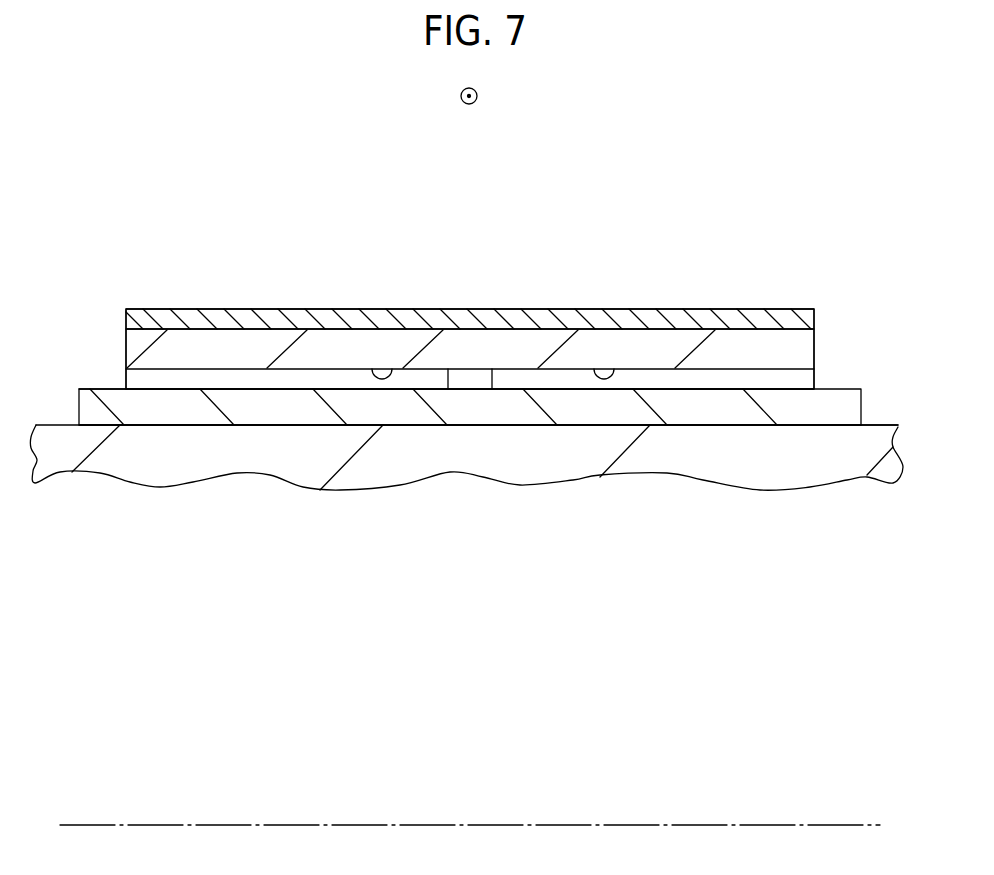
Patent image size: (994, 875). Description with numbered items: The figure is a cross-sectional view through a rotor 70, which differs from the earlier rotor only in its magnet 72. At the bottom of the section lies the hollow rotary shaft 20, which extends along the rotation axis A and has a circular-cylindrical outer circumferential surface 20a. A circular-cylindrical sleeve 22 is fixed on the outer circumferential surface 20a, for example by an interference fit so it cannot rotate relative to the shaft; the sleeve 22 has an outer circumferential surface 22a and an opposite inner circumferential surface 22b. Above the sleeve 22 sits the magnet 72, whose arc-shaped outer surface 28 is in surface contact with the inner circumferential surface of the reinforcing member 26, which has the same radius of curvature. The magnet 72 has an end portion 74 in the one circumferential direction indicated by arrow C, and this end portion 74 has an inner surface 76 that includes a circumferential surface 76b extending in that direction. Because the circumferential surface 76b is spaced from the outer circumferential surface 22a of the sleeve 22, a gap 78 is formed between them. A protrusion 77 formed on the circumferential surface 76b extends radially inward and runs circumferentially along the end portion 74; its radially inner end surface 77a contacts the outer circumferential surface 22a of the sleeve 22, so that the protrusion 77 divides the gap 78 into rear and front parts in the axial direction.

The rotor 70 is at (828, 113).
The arrow C is at (479, 102).
The magnet 72 is at (822, 346).
The outer surface 28 is at (243, 327).
The reinforcing member 26 is at (327, 318).
The end portion 74 is at (522, 363).
The inner surface 76 is at (314, 378).
The circumferential surface 76b is at (388, 369).
The protrusion 77 is at (470, 380).
The radially inner end surface 77a is at (457, 389).
The gap 78 is at (247, 380).
The sleeve 22 is at (90, 410).
The outer circumferential surface 22a is at (104, 388).
The inner circumferential surface 22b is at (150, 425).
The rotary shaft 20 is at (577, 470).
The outer circumferential surface 20a is at (868, 425).
The rotation axis A is at (852, 825).